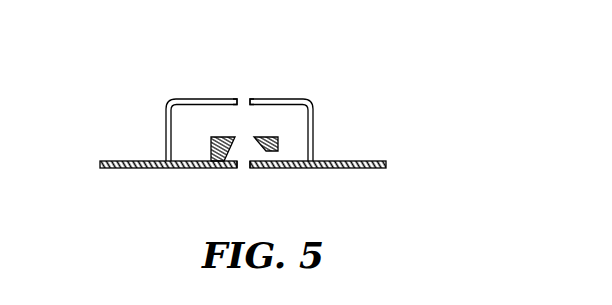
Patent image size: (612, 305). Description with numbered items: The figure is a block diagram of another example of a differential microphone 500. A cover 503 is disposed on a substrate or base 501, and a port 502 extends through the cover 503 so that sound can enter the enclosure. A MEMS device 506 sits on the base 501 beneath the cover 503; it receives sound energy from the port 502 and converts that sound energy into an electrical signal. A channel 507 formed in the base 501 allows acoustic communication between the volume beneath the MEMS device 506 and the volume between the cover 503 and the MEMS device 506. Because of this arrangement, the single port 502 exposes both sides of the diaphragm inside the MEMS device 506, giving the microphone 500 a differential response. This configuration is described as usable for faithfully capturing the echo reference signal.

The microphone 500 is at (293, 116).
The base 501 is at (372, 168).
The port 502 is at (272, 77).
The cover 503 is at (166, 110).
The MEMS device 506 is at (231, 143).
The channel 507 is at (287, 154).